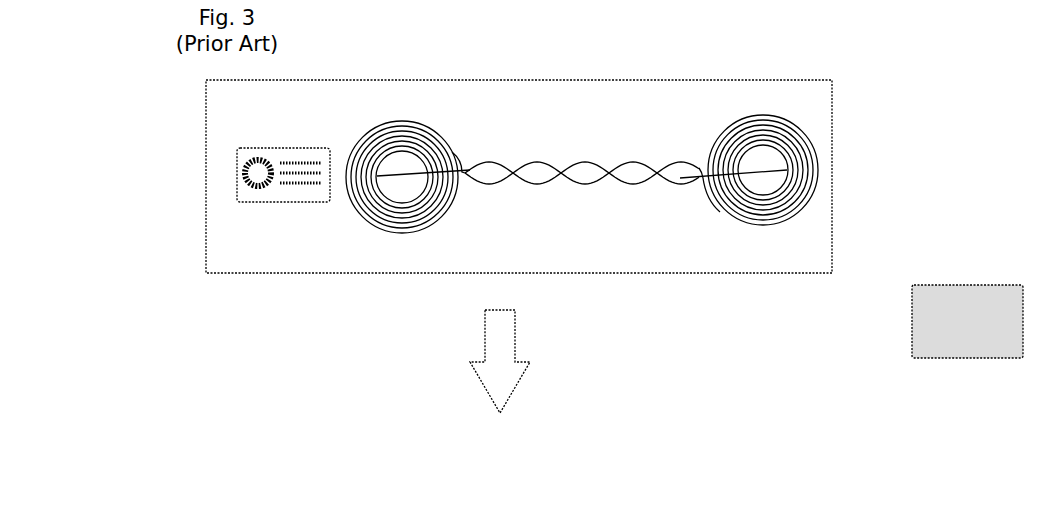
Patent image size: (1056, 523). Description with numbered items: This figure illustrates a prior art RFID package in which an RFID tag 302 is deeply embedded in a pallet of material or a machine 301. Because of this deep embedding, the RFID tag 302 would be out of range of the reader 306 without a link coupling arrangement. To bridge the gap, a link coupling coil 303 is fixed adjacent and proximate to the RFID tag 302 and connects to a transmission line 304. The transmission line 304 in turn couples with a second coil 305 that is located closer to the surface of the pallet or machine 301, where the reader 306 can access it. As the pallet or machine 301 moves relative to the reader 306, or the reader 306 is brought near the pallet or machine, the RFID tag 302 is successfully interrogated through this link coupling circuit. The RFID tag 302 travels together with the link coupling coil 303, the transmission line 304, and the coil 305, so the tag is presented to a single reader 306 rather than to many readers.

The pallet of material or machine 301 is at (447, 68).
The RFID tag 302 is at (301, 137).
The link coupling coil 303 is at (400, 110).
The transmission line 304 is at (581, 146).
The coil 305 is at (741, 110).
The reader 306 is at (973, 274).